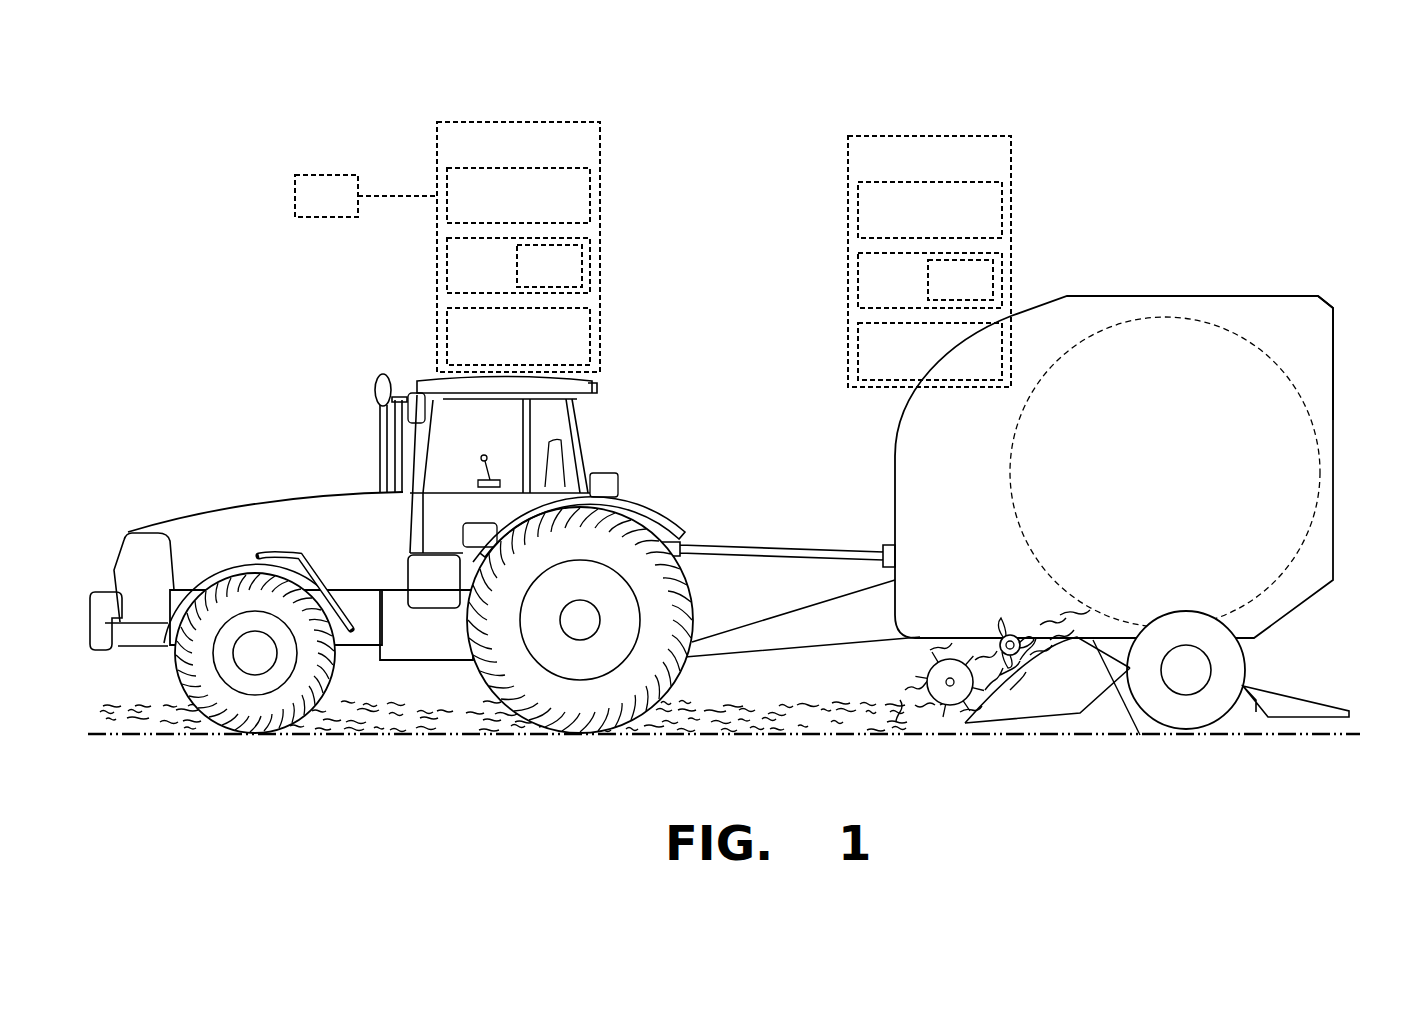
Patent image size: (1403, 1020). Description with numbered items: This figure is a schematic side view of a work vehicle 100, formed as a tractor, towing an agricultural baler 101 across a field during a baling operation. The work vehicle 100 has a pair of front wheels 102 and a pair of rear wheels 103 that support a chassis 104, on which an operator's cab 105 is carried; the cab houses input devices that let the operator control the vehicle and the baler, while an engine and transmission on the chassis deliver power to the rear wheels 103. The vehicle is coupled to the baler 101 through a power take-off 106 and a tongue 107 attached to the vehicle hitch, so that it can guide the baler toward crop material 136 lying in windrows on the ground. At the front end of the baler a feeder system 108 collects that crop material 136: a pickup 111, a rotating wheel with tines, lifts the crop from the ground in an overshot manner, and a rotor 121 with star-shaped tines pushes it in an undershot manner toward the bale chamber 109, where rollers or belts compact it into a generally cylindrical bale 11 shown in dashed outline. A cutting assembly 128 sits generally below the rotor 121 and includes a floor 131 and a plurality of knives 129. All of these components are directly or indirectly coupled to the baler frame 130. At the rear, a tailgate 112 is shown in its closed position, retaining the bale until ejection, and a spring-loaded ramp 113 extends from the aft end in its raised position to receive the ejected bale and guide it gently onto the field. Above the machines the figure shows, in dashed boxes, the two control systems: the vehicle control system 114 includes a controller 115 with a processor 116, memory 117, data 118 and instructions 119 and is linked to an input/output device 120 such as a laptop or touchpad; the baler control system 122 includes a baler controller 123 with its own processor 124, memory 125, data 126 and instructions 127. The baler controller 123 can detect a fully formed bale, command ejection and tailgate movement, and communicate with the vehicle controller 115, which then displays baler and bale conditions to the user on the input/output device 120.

The work vehicle 100 is at (501, 553).
The agricultural baler 101 is at (1090, 491).
The front wheels 102 is at (182, 667).
The rear wheels 103 is at (690, 668).
The chassis 104 is at (405, 657).
The operator's cab 105 is at (460, 405).
The power take-off 106 is at (737, 545).
The tongue 107 is at (770, 618).
The feeder system 108 is at (897, 670).
The bale chamber 109 is at (1214, 297).
The bale 11 is at (1297, 388).
The pickup 111 is at (943, 695).
The tailgate 112 is at (1322, 292).
The ramp 113 is at (1320, 690).
The control system 114 is at (507, 220).
The controller 115 is at (533, 156).
The processor 116 is at (508, 212).
The memory 117 is at (504, 281).
The data 118 is at (572, 281).
The instructions 119 is at (509, 351).
The input/output device 120 is at (350, 209).
The rotor 121 is at (1000, 623).
The control system 122 is at (864, 261).
The baler controller 123 is at (944, 170).
The processor 124 is at (923, 224).
The memory 125 is at (912, 294).
The data 126 is at (982, 294).
The instructions 127 is at (923, 366).
The cutting assembly 128 is at (980, 742).
The knives 129 is at (1027, 680).
The frame 130 is at (1140, 735).
The floor 131 is at (1038, 663).
The crop material 136 is at (372, 735).